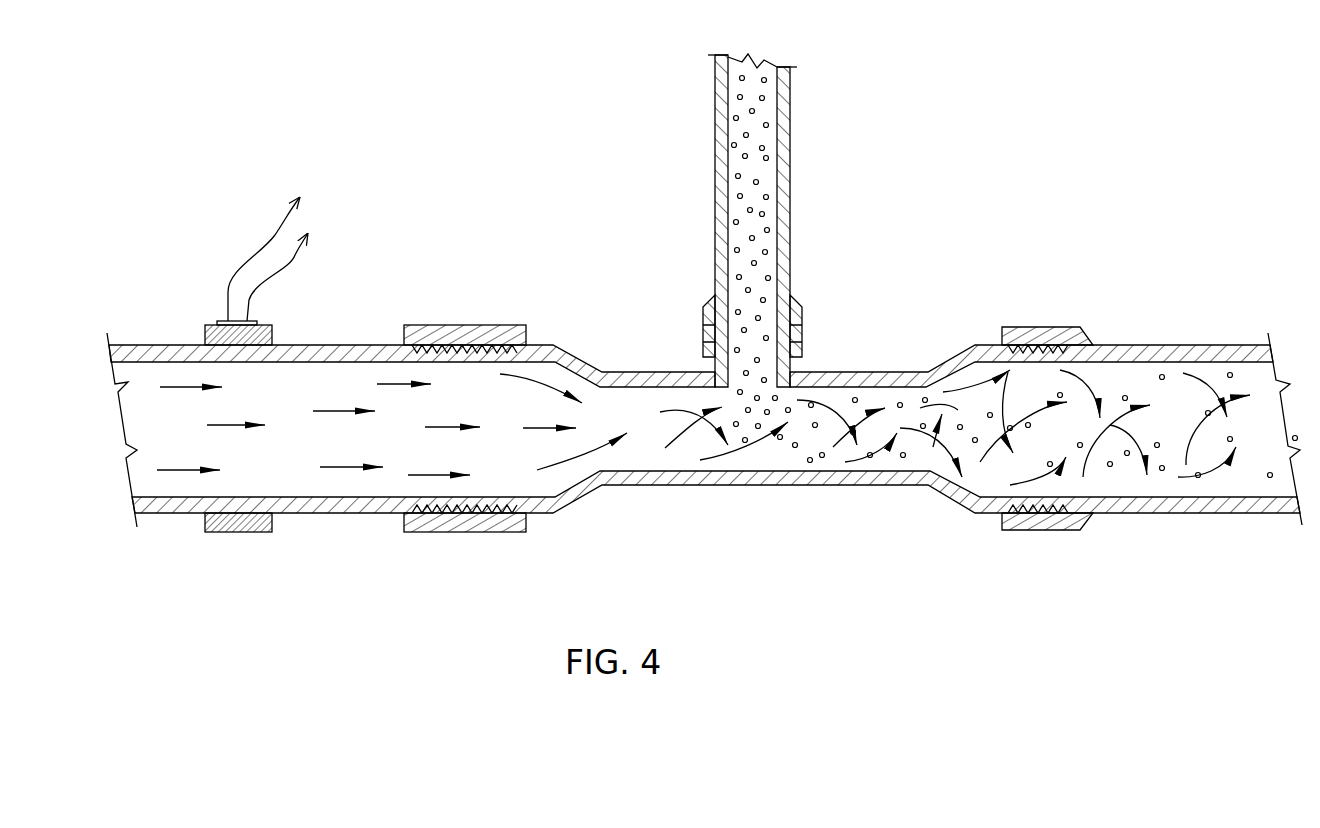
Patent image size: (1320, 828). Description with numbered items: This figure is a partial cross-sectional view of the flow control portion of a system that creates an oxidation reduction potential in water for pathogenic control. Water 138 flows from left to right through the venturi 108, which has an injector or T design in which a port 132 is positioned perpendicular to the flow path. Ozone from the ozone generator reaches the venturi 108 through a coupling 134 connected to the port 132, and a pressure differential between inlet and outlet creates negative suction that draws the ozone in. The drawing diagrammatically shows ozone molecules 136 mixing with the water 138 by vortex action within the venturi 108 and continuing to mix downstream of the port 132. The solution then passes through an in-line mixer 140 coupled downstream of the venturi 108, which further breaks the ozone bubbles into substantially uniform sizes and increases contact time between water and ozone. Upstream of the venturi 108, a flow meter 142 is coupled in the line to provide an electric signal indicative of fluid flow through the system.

The venturi 108 is at (900, 290).
The port 132 is at (787, 357).
The coupling 134 is at (785, 130).
The ozone molecules 136 is at (738, 176).
The water 138 is at (487, 398).
The in-line mixer 140 is at (1168, 355).
The flow meter 142 is at (235, 527).